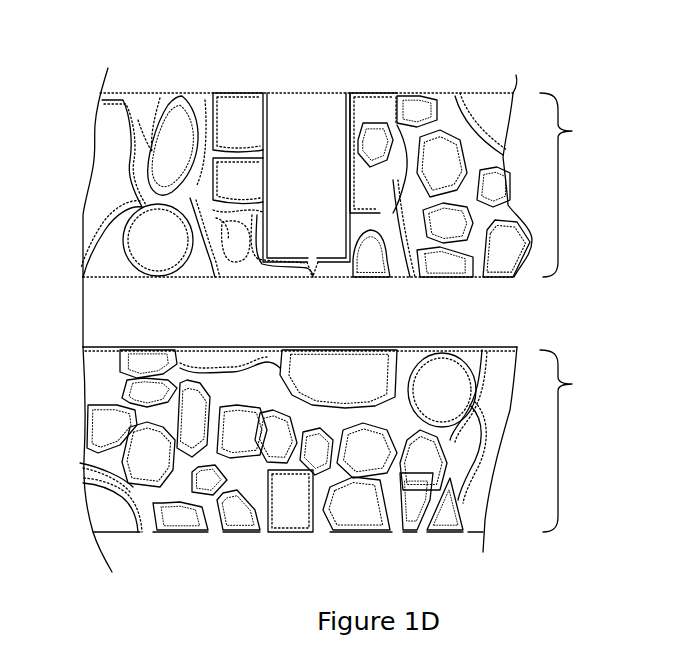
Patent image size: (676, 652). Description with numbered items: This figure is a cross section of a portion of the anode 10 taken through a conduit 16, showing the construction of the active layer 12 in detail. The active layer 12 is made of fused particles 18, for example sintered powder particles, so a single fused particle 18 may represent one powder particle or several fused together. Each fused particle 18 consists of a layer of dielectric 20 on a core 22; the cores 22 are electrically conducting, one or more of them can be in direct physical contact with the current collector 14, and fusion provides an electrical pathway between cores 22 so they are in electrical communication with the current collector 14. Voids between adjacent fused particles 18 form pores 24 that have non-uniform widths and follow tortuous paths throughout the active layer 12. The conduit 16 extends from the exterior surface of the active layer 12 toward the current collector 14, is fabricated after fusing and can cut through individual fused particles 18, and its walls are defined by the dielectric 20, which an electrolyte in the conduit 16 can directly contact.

The anode 10 is at (38, 263).
The active layer 12 is at (345, 320).
The current collector 14 is at (110, 313).
The conduit 16 is at (292, 134).
The fused particle 18 is at (158, 93).
The dielectric 20 is at (503, 157).
The core 22 is at (243, 110).
The pore 24 is at (348, 237).